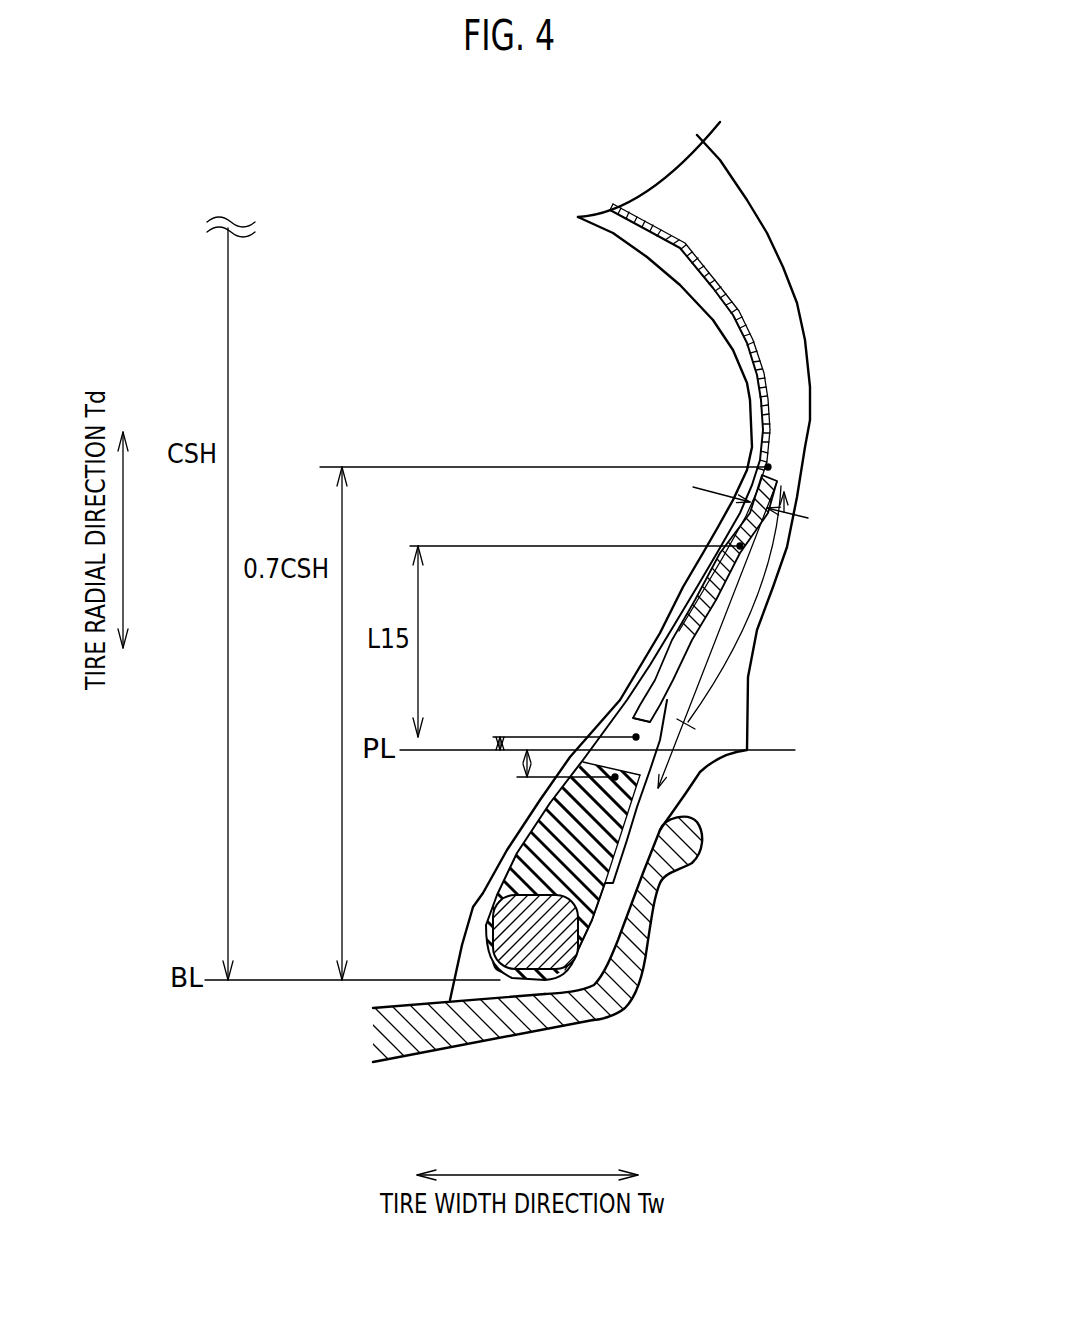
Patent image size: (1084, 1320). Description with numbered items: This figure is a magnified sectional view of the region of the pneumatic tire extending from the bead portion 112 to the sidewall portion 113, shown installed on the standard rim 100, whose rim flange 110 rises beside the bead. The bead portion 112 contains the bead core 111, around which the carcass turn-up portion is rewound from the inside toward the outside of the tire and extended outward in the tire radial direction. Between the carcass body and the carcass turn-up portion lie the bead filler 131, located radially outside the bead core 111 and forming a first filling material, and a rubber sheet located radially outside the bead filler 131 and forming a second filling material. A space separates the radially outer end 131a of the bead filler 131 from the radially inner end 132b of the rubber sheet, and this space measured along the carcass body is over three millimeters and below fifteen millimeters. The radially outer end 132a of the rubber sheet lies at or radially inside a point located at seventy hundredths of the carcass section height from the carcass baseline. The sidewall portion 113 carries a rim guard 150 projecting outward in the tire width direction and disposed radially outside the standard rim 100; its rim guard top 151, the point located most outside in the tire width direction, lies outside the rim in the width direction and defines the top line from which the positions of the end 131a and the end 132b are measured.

The standard rim 100 is at (502, 1035).
The rim flange 110 is at (655, 888).
The bead core 111 is at (545, 927).
The bead portion 112 is at (466, 905).
The sidewall portion 113 is at (797, 400).
The bead filler 131 is at (527, 866).
The end of the bead filler 131a is at (602, 759).
The end of the rubber sheet 132a is at (779, 472).
The end of the rubber sheet 132b is at (650, 712).
The rim guard 150 is at (756, 718).
The rim guard top 151 is at (751, 752).